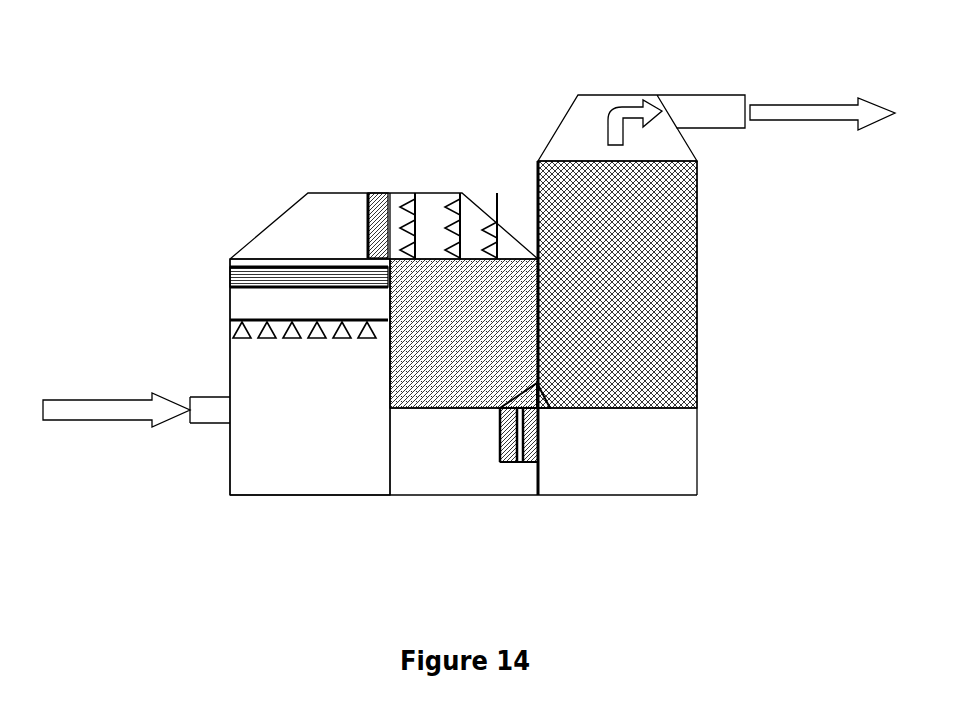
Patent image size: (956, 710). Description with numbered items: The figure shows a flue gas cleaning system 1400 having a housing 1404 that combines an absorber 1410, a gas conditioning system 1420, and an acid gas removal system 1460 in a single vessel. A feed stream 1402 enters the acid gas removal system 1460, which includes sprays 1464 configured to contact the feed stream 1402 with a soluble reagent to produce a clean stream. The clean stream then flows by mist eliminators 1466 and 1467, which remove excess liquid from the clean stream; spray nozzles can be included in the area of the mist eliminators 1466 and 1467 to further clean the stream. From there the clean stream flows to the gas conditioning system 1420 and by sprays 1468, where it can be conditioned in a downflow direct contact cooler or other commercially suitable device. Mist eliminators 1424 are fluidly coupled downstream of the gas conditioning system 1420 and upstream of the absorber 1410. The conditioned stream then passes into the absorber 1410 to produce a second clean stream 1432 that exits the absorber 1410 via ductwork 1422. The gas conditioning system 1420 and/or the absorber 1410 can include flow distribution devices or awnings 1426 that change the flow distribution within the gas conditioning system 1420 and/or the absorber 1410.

The flue gas cleaning system 1400 is at (190, 102).
The feed stream 1402 is at (136, 397).
The housing 1404 is at (703, 260).
The absorber 1410 is at (617, 284).
The gas conditioning system 1420 is at (464, 333).
The ductwork 1422 is at (702, 92).
The mist eliminators 1424 is at (543, 444).
The awnings 1426 is at (541, 397).
The second clean stream 1432 is at (822, 99).
The acid gas removal system 1460 is at (310, 377).
The sprays 1464 is at (228, 321).
The mist eliminator 1466 is at (230, 275).
The mist eliminator 1467 is at (376, 192).
The sprays 1468 is at (453, 204).